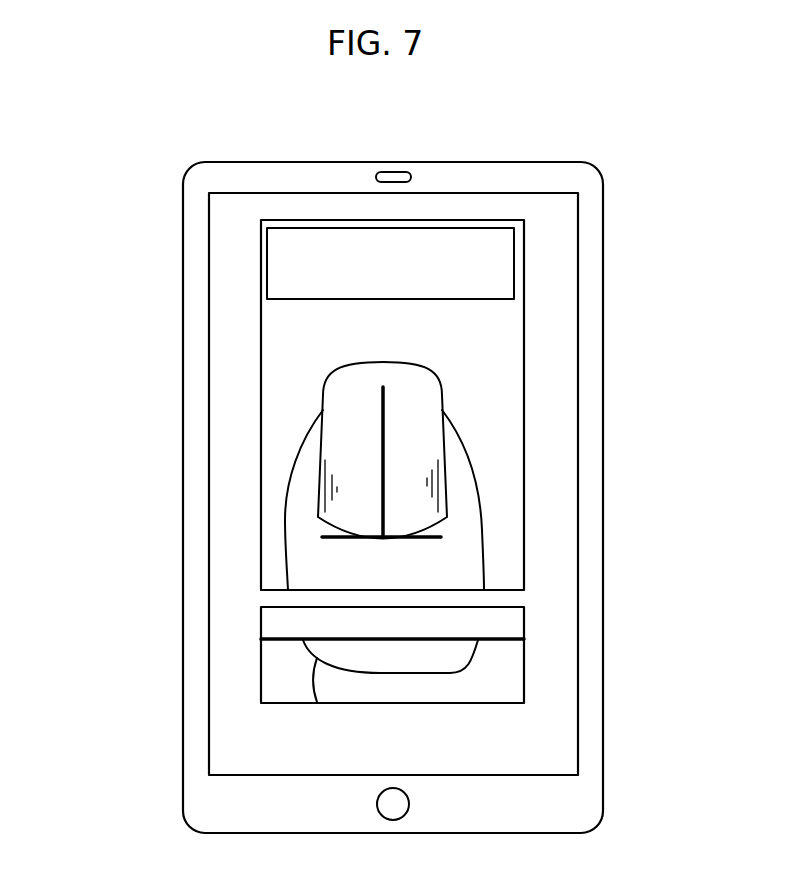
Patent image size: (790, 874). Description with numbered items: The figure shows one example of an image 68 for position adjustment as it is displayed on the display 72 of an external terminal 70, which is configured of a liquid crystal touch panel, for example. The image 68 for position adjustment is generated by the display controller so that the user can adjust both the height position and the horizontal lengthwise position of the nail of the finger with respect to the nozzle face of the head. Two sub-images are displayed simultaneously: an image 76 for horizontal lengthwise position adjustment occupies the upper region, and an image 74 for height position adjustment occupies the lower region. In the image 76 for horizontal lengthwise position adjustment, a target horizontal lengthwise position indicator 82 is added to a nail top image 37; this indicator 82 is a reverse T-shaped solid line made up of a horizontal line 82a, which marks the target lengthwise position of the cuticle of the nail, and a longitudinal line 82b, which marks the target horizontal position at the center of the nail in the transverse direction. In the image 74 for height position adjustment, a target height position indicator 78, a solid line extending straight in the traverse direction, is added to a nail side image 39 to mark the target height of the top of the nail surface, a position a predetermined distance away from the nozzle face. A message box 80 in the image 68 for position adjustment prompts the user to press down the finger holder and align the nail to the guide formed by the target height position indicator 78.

The external terminal 70 is at (572, 161).
The display 72 is at (561, 217).
The image for position adjustment 68 is at (552, 320).
The image for horizontal lengthwise position adjustment 76 is at (290, 392).
The message box 80 is at (507, 253).
The nail top image 37 is at (475, 457).
The target horizontal lengthwise position indicator 82 is at (244, 471).
The horizontal line 82a is at (343, 538).
The longitudinal line 82b is at (383, 488).
The image for height position adjustment 74 is at (285, 623).
The target height position indicator 78 is at (275, 642).
The nail side image 39 is at (484, 697).